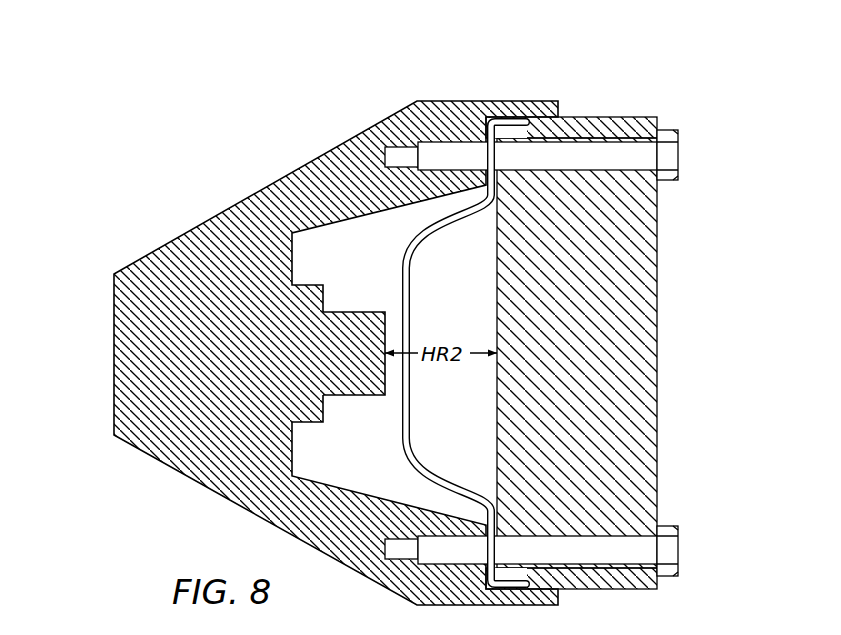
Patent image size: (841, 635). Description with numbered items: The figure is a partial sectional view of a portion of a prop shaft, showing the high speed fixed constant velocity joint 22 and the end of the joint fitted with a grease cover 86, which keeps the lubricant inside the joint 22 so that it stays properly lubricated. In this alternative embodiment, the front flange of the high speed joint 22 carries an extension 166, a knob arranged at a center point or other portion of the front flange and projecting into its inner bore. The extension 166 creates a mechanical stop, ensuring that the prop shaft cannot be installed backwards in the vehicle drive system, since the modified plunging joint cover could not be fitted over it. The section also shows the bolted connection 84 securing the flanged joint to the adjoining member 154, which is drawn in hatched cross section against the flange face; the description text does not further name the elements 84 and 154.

The high speed constant velocity joint 22 is at (590, 100).
The fastener bolt 84 is at (665, 553).
The grease cover 86 is at (428, 226).
The wedge body 154 is at (156, 348).
The extension 166 is at (362, 330).